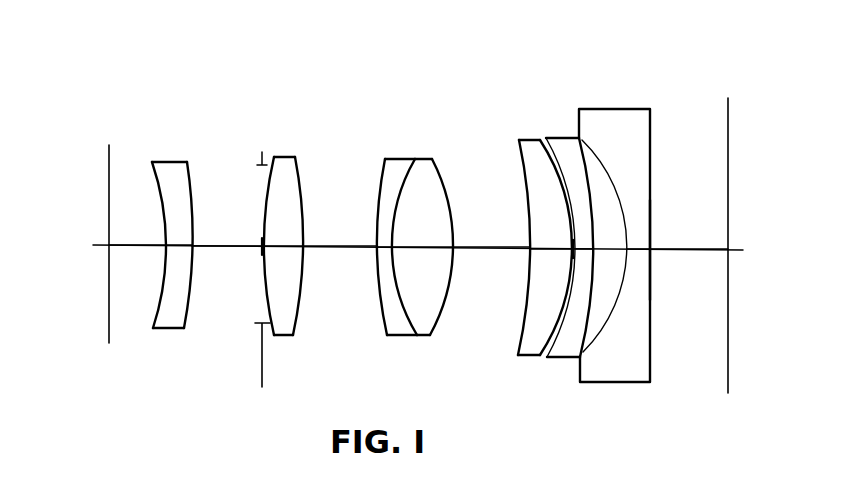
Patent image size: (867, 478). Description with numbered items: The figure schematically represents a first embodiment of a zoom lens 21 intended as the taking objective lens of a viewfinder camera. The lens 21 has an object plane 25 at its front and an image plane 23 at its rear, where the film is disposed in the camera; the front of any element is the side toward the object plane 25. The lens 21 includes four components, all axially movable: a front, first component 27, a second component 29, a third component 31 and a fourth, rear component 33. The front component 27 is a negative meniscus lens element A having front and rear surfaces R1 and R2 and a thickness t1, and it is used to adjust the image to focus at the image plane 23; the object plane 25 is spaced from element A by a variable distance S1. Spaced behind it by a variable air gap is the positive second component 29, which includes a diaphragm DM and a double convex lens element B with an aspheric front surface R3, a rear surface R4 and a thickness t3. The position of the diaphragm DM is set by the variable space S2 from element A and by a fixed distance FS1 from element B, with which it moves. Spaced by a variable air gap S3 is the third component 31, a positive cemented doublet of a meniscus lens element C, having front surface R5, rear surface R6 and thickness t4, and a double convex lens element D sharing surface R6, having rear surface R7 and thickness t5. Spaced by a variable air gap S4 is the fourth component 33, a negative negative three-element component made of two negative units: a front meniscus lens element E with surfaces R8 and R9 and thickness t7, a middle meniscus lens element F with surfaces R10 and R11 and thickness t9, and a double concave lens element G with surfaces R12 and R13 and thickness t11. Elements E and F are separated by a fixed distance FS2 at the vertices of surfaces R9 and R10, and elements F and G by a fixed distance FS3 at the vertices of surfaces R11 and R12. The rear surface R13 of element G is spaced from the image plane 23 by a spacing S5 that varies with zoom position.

The zoom lens 21 is at (315, 106).
The image plane 23 is at (729, 142).
The object plane 25 is at (107, 177).
The front, first component 27 is at (138, 133).
The second component 29 is at (253, 133).
The third component 31 is at (377, 137).
The fourth, rear component 33 is at (512, 98).
The negative meniscus lens element A is at (163, 312).
The double convex lens element B is at (275, 292).
The meniscus lens element C is at (390, 295).
The double convex lens element D is at (427, 307).
The front meniscus lens element E is at (538, 325).
The middle meniscus lens element F is at (563, 350).
The double concave lens element G is at (622, 362).
The front surface of lens element A R1 is at (153, 178).
The rear surface of lens element A R2 is at (190, 183).
The front surface of lens element B R3 is at (266, 195).
The rear surface of lens element B R4 is at (303, 205).
The front surface of lens element C R5 is at (378, 182).
The cemented surface between lens elements C and D R6 is at (408, 173).
The rear surface of lens element D R7 is at (451, 212).
The front surface of lens element E R8 is at (528, 193).
The rear surface of lens element E R9 is at (538, 163).
The front surface of lens element F R10 is at (558, 165).
The rear surface of lens element F R11 is at (584, 168).
The front surface of lens element G R12 is at (621, 206).
The rear surface of lens element G R13 is at (648, 237).
The object distance S1 is at (132, 245).
The variable space between element A and diaphragm S2 is at (205, 245).
The variable air gap between second and third components S3 is at (318, 246).
The variable air gap between third and fourth components S4 is at (507, 247).
The back focal spacing S5 is at (700, 250).
The thickness of lens element A t1 is at (172, 249).
The thickness of lens element B t3 is at (280, 250).
The thickness of lens element C t4 is at (383, 250).
The thickness of lens element D t5 is at (420, 248).
The thickness of lens element E t7 is at (553, 251).
The thickness of lens element F t9 is at (573, 247).
The thickness of lens element G t11 is at (636, 253).
The fixed distance between diaphragm and element B FS1 is at (262, 240).
The fixed distance between elements E and F FS2 is at (572, 252).
The fixed distance between elements F and G FS3 is at (607, 250).
The diaphragm DM is at (262, 353).